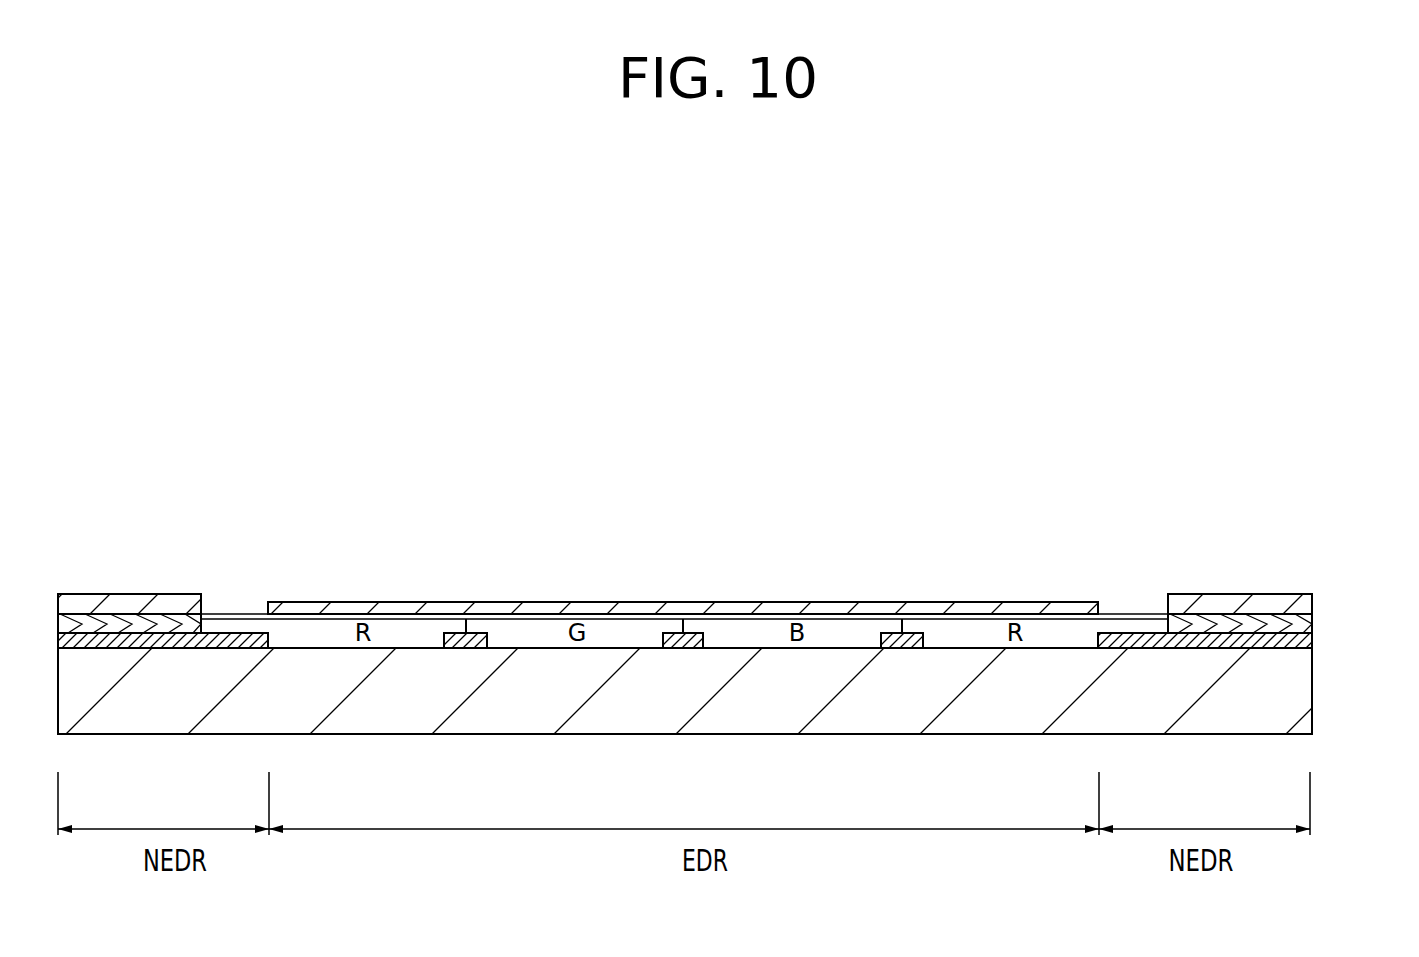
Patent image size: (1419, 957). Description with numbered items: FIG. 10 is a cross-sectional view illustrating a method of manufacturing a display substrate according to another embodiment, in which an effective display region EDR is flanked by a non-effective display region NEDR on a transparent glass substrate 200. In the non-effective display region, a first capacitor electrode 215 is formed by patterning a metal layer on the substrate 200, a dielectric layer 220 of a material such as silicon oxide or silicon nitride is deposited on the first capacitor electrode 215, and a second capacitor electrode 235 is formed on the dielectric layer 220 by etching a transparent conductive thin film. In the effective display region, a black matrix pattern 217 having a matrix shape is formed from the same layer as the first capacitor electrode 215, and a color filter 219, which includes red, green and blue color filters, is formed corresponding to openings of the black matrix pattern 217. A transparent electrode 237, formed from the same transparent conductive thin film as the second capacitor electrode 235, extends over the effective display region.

The substrate 200 is at (1303, 687).
The first capacitor electrode 215 is at (1307, 643).
The black matrix pattern 217 is at (888, 633).
The color filter 219 is at (318, 630).
The dielectric layer 220 is at (1303, 625).
The second capacitor electrode 235 is at (1309, 607).
The transparent electrode 237 is at (1057, 612).